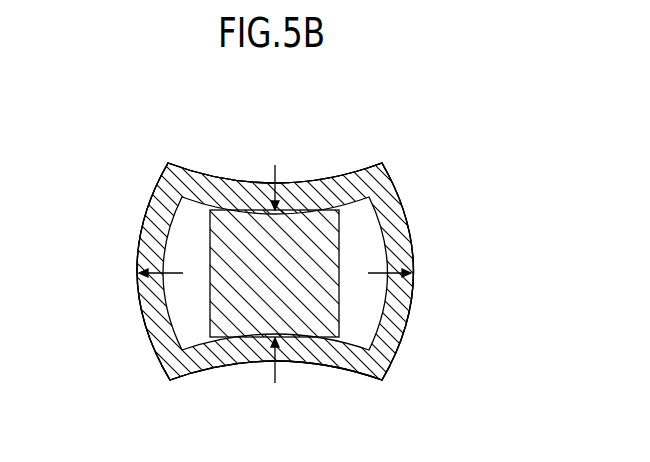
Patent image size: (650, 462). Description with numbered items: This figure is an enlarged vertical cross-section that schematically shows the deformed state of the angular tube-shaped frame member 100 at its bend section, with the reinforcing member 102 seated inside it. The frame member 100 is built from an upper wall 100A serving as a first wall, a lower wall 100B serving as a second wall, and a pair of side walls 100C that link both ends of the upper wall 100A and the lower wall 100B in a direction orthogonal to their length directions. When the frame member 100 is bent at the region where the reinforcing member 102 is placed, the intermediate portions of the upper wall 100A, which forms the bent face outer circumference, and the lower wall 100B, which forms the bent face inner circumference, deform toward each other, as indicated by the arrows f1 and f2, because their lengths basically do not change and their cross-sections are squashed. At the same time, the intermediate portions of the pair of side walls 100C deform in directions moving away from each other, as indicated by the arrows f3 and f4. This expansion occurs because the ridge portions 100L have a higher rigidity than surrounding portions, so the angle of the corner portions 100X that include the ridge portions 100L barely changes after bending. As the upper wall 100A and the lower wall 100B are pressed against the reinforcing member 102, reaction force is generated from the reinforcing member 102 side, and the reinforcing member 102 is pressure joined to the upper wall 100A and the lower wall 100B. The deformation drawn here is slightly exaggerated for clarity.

The frame member 100 is at (403, 178).
The upper wall 100A is at (275, 165).
The lower wall 100B is at (315, 368).
The side walls 100C is at (138, 258).
The ridge portions 100L is at (168, 163).
The corner portions 100X is at (160, 158).
The reinforcing member 102 is at (382, 235).
The arrow indicating deformation direction of the upper wall f1 is at (277, 182).
The arrow indicating deformation direction of the lower wall f2 is at (290, 377).
The arrow indicating deformation direction of one side wall f3 is at (180, 270).
The arrow indicating deformation direction of the other side wall f4 is at (383, 273).